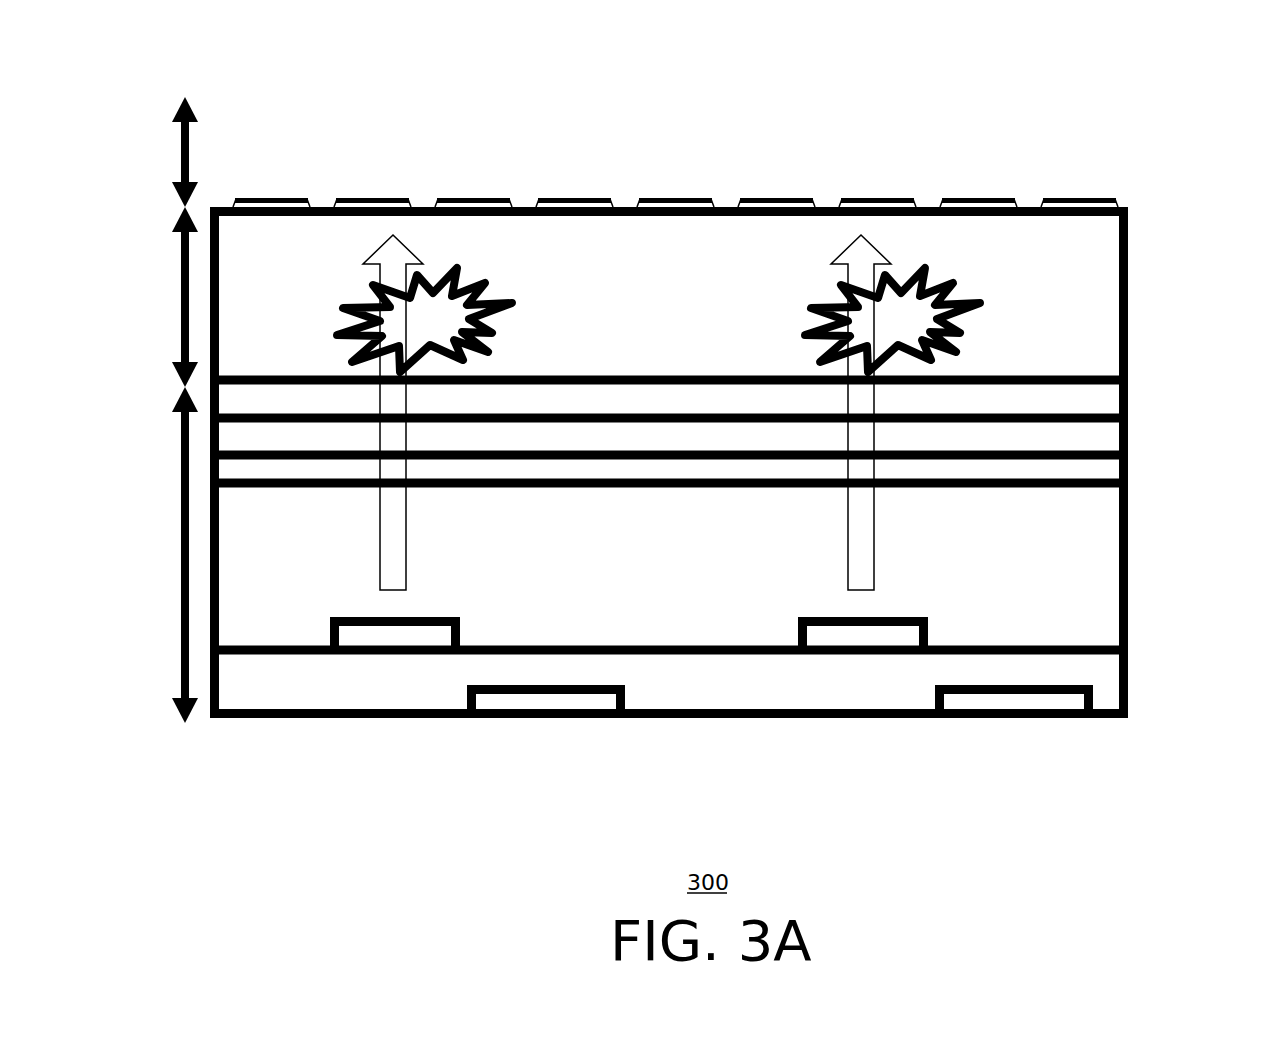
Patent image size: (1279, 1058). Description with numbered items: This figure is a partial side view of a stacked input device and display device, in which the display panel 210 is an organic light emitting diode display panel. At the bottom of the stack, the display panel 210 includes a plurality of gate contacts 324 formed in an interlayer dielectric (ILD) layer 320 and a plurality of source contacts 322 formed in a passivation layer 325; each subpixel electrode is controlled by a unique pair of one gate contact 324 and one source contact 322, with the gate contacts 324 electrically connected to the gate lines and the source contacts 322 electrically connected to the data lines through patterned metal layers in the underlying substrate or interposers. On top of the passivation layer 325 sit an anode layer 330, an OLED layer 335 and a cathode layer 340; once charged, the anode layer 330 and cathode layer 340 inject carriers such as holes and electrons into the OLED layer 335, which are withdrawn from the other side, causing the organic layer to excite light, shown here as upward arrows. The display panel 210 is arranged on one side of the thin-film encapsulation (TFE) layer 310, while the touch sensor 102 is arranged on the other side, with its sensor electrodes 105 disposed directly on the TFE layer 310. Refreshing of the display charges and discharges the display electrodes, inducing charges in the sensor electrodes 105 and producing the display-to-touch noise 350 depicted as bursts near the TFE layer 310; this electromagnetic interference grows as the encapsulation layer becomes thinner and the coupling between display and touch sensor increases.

The touch sensor 102 is at (175, 113).
The sensor electrodes 105 is at (365, 198).
The thin-film encapsulation (TFE) layer 310 is at (177, 267).
The display panel 210 is at (178, 515).
The cathode layer 340 is at (1120, 397).
The OLED layer 335 is at (1120, 432).
The anode layer 330 is at (1120, 467).
The passivation layer 325 is at (1120, 556).
The interlayer dielectric (ILD) layer 320 is at (1120, 693).
The source contacts 322 is at (430, 620).
The gate contacts 324 is at (467, 697).
The noise 350 is at (500, 297).